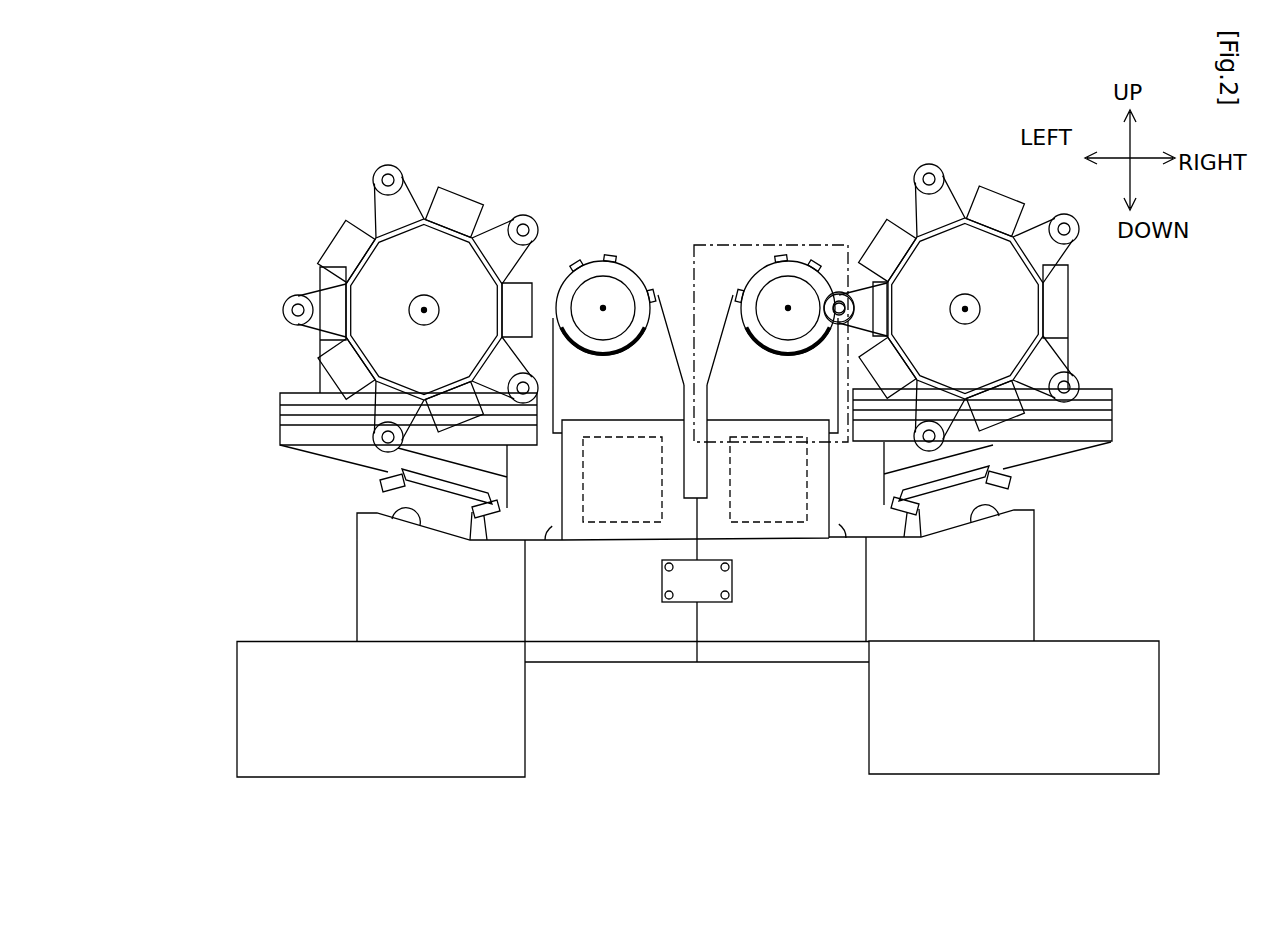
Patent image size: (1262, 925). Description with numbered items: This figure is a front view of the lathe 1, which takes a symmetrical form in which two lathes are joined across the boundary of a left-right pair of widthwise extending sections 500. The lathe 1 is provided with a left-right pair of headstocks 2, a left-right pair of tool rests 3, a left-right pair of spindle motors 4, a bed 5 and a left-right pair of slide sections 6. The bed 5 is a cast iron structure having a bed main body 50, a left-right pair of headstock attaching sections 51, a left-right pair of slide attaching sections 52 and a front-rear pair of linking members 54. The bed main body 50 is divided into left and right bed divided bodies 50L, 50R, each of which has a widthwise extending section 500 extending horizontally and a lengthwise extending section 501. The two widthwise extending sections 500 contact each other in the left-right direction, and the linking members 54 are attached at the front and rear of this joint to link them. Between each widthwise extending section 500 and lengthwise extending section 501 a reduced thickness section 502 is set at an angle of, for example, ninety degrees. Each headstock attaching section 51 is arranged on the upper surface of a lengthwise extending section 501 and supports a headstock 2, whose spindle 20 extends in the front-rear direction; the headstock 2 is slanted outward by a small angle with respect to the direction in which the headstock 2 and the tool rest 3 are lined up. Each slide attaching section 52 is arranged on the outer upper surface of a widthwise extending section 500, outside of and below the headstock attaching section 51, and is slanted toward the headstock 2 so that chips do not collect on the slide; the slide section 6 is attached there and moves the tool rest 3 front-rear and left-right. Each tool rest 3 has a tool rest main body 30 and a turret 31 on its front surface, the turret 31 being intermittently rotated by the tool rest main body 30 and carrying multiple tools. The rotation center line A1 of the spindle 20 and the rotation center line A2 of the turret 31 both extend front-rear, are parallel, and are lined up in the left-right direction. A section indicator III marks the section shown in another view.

The lathe 1 is at (297, 132).
The headstock 2 is at (675, 281).
The spindle 20 is at (590, 294).
The rotation center line of spindle A1 is at (603, 308).
The tool rest 3 is at (674, 286).
The tool rest main body 30 is at (330, 348).
The turret 31 is at (375, 288).
The rotation center line of turret A2 is at (424, 308).
The spindle motor 4 is at (623, 522).
The bed 5 is at (298, 655).
The bed main body 50 is at (697, 639).
The bed divided body 50L is at (638, 630).
The bed divided body 50R is at (730, 628).
The headstock attaching section 51 is at (573, 377).
The slide attaching section 52 is at (398, 503).
The linking member 54 is at (680, 628).
The widthwise extending section 500 is at (370, 558).
The lengthwise extending section 501 is at (503, 283).
The reduced thickness section 502 is at (562, 538).
The slide section 6 is at (297, 397).
The section line III is at (773, 317).